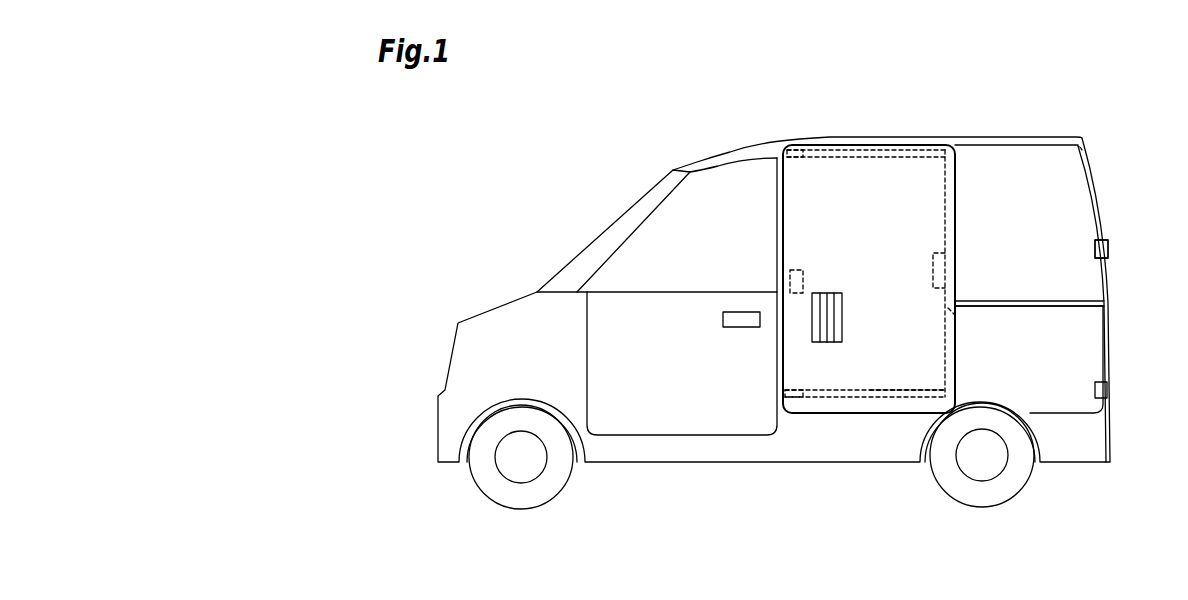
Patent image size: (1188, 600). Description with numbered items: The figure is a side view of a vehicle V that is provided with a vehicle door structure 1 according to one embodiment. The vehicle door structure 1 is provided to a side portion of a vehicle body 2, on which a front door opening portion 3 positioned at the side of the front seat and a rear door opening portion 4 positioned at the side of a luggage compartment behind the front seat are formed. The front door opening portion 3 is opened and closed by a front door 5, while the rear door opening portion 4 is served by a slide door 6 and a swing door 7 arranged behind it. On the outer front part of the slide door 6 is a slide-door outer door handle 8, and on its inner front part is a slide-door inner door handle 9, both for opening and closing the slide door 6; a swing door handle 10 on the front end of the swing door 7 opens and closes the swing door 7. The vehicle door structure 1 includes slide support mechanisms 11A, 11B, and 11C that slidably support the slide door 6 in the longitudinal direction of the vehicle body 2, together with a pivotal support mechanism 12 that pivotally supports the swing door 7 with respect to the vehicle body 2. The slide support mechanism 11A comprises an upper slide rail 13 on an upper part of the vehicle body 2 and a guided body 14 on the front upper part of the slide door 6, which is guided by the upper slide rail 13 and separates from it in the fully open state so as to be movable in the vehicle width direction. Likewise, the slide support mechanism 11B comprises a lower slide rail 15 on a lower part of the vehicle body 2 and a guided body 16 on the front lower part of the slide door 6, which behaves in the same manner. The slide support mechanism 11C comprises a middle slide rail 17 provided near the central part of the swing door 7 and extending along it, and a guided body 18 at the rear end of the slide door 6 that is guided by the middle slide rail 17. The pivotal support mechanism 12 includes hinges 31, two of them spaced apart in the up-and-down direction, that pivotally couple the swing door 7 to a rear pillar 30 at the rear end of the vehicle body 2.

The vehicle V is at (1100, 122).
The vehicle door structure 1 is at (990, 141).
The vehicle body 2 is at (765, 147).
The front door opening portion 3 is at (735, 167).
The rear door opening portion 4 is at (1045, 146).
The front door 5 is at (675, 412).
The slide door 6 is at (875, 377).
The swing door 7 is at (1068, 342).
The slide-door outer door handle 8 is at (845, 312).
The slide-door inner door handle 9 is at (804, 272).
The swing door handle 10 is at (933, 262).
The slide support mechanism 11A is at (915, 147).
The slide support mechanism 11B is at (828, 402).
The slide support mechanism 11C is at (998, 298).
The pivotal support mechanism 12 is at (1110, 238).
The upper slide rail 13 is at (884, 148).
The guided body 14 is at (800, 153).
The lower slide rail 15 is at (885, 392).
The guided body 16 is at (803, 400).
The middle slide rail 17 is at (1026, 300).
The guided body 18 is at (955, 318).
The rear pillar 30 is at (1095, 185).
The hinge 31 is at (1110, 250).